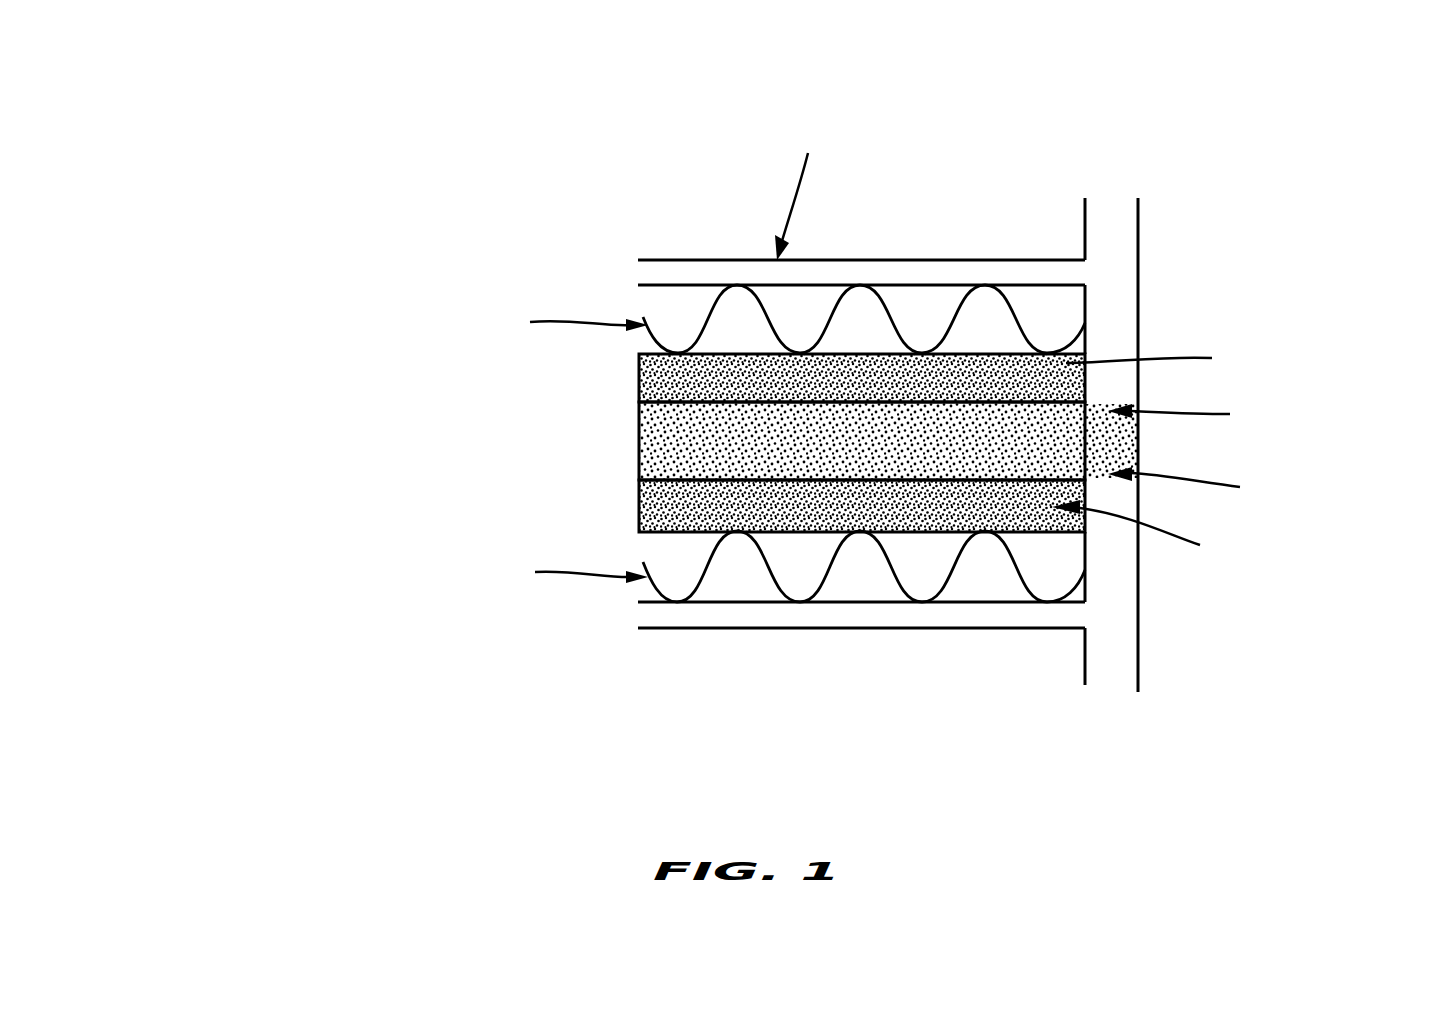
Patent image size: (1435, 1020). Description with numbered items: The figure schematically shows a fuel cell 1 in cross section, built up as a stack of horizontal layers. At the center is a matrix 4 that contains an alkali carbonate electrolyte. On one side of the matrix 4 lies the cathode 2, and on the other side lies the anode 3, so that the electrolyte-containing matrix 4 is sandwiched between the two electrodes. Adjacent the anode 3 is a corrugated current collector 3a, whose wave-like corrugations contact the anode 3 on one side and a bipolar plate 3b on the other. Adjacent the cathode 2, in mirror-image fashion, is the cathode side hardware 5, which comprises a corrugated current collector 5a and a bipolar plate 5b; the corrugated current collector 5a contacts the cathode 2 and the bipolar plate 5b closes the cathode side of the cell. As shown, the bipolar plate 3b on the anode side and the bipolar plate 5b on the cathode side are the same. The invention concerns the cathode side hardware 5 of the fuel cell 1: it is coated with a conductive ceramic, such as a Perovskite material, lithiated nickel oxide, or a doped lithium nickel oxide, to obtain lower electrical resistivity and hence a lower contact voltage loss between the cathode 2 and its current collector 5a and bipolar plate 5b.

The fuel cell 1 is at (1002, 195).
The cathode 2 is at (1040, 382).
The anode 3 is at (1025, 525).
The corrugated current collector 3a is at (1020, 582).
The bipolar plate 3b is at (852, 618).
The matrix 4 is at (1083, 442).
The cathode side hardware 5 is at (710, 256).
The corrugated current collector 5a is at (893, 318).
The bipolar plate 5b is at (852, 267).